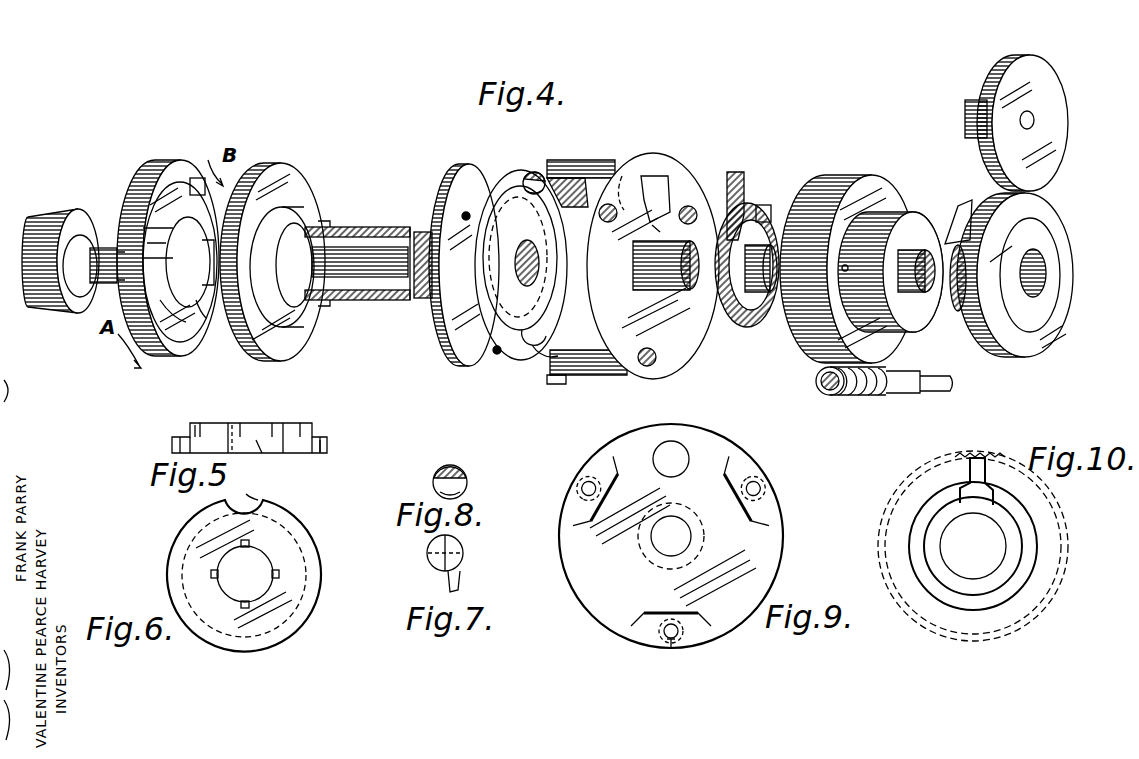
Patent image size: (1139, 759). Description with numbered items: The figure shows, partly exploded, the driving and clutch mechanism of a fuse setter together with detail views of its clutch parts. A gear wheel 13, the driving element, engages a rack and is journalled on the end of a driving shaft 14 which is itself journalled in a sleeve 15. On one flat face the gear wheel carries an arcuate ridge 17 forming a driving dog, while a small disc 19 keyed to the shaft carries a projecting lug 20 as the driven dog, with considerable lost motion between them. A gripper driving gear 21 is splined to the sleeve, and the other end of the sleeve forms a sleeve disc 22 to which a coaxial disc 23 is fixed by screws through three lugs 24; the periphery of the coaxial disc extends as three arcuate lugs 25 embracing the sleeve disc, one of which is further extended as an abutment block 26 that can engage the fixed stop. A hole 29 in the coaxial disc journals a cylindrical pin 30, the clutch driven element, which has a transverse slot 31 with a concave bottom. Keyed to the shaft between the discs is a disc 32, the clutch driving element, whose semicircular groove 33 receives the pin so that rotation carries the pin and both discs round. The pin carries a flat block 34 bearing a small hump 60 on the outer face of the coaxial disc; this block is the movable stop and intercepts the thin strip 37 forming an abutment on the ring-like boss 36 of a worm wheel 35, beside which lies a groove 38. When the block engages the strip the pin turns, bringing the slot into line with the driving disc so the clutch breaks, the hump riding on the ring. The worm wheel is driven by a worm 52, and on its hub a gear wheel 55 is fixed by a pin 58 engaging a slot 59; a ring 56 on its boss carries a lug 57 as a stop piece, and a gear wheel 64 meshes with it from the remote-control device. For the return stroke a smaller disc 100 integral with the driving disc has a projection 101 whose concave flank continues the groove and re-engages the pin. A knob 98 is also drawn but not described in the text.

In FIG. 4, the gear wheel 13 is at (164, 182).
In FIG. 4, the driving shaft 14 is at (112, 245).
In FIG. 4, the sleeve 15 is at (362, 298).
In FIG. 4, the arcuate ridge 17 is at (176, 330).
In FIG. 4, the small disc 19 is at (198, 304).
In FIG. 4, the projecting lug 20 is at (166, 250).
In FIG. 4, the gripper driving gear 21 is at (290, 182).
In FIG. 4, the sleeve disc 22 is at (454, 204).
In FIG. 4, the coaxial disc 23 is at (680, 340).
In FIG. 9, the coaxial disc 23 is at (594, 590).
In FIG. 4, the lugs 24 is at (585, 162).
In FIG. 9, the lugs 24 is at (604, 462).
In FIG. 4, the arcuate lugs 25 is at (542, 354).
In FIG. 9, the arcuate lugs 25 is at (712, 632).
In FIG. 4, the abutment block 26 is at (560, 384).
In FIG. 9, the abutment block 26 is at (656, 645).
In FIG. 9, the hole 29 is at (684, 472).
In FIG. 4, the pin 30 is at (538, 172).
In FIG. 8, the pin 30 is at (466, 480).
In FIG. 7, the pin 30 is at (430, 548).
In FIG. 4, the transverse slot 31 is at (526, 174).
In FIG. 8, the transverse slot 31 is at (436, 480).
In FIG. 4, the disc 32 is at (478, 330).
In FIG. 5, the disc 32 is at (318, 455).
In FIG. 6, the disc 32 is at (296, 576).
In FIG. 4, the semicircular groove 33 is at (510, 345).
In FIG. 5, the semicircular groove 33 is at (258, 455).
In FIG. 6, the semicircular groove 33 is at (253, 490).
In FIG. 4, the flat block 34 is at (670, 233).
In FIG. 7, the flat block 34 is at (448, 584).
In FIG. 4, the worm wheel 35 is at (842, 192).
In FIG. 10, the worm wheel 35 is at (1048, 520).
In FIG. 4, the ring-like boss 36 is at (742, 322).
In FIG. 10, the ring-like boss 36 is at (1020, 582).
In FIG. 4, the thin strip 37 is at (727, 182).
In FIG. 10, the thin strip 37 is at (988, 468).
In FIG. 4, the groove 38 is at (776, 197).
In FIG. 10, the groove 38 is at (962, 474).
In FIG. 4, the worm 52 is at (852, 396).
In FIG. 4, the gear wheel 55 is at (1062, 256).
In FIG. 4, the ring 56 is at (985, 225).
In FIG. 4, the lug 57 is at (954, 212).
In FIG. 4, the pin 58 is at (847, 268).
In FIG. 4, the slot 59 is at (952, 310).
In FIG. 4, the small hump 60 is at (660, 186).
In FIG. 7, the small hump 60 is at (462, 560).
In FIG. 4, the gear wheel 64 is at (1058, 98).
In FIG. 4, the knob 98 is at (68, 214).
In FIG. 4, the disc 100 is at (494, 300).
In FIG. 5, the disc 100 is at (195, 425).
In FIG. 6, the disc 100 is at (185, 564).
In FIG. 4, the projection 101 is at (560, 292).
In FIG. 5, the projection 101 is at (234, 423).
In FIG. 6, the projection 101 is at (220, 510).